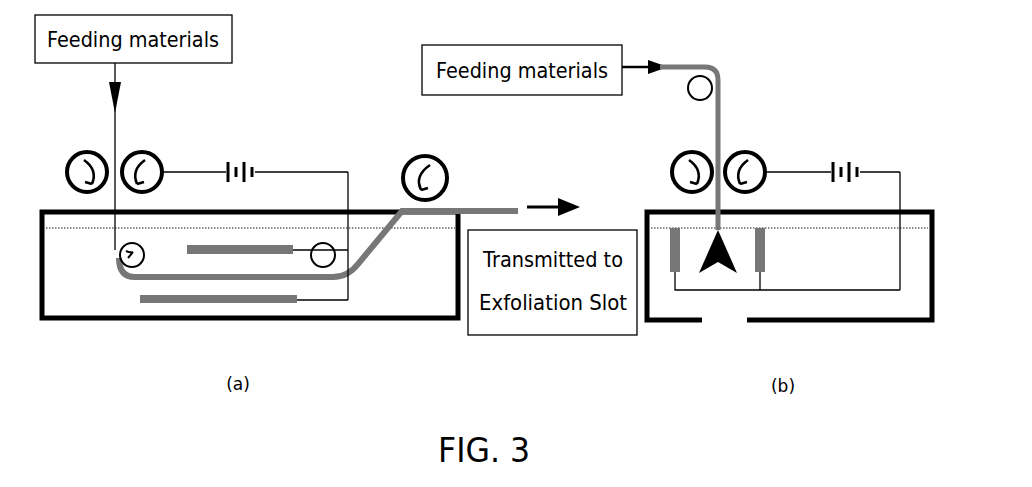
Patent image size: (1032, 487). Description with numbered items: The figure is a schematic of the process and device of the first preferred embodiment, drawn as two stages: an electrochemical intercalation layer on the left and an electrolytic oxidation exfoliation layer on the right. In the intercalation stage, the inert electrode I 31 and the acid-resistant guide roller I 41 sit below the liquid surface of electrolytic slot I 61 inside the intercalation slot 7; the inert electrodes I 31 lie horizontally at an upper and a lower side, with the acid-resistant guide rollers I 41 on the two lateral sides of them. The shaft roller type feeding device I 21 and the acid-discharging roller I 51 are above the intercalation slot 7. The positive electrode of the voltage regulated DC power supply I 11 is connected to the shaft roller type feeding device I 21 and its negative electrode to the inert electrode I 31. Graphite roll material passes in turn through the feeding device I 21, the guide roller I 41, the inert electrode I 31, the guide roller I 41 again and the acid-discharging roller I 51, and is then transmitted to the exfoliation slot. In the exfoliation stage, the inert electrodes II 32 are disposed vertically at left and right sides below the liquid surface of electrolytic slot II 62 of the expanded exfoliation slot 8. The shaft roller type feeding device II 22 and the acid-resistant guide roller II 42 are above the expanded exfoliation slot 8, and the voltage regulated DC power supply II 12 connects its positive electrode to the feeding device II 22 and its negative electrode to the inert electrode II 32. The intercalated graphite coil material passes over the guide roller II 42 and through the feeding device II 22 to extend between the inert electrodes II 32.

The intercalation slot 7 is at (392, 310).
The expanded exfoliation slot 8 is at (815, 308).
The voltage regulated DC power supply I 11 is at (244, 161).
The voltage regulated DC power supply II 12 is at (845, 160).
The shaft roller type feeding device I 21 is at (84, 170).
The shaft roller type feeding device II 22 is at (680, 168).
The inert electrode I 31 is at (295, 249).
The inert electrode II 32 is at (681, 262).
The acid-resistant guide roller I 41 is at (124, 265).
The acid-resistant guide roller II 42 is at (707, 84).
The acid-discharging roller I 51 is at (440, 165).
The liquid surface of electrolytic slot I 61 is at (466, 222).
The liquid surface of electrolytic slot II 62 is at (642, 222).